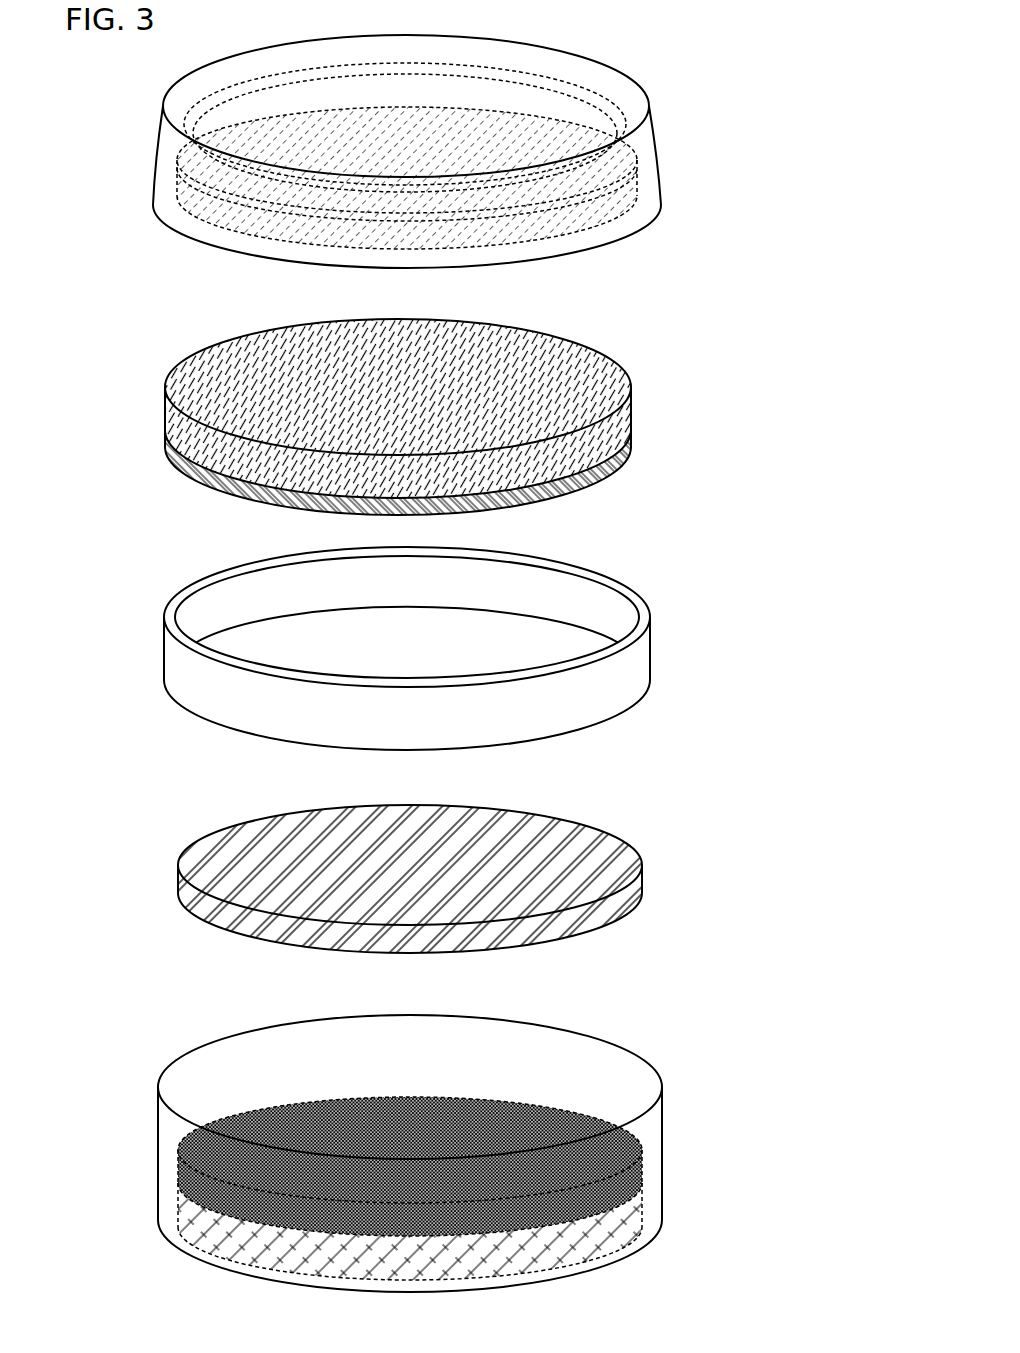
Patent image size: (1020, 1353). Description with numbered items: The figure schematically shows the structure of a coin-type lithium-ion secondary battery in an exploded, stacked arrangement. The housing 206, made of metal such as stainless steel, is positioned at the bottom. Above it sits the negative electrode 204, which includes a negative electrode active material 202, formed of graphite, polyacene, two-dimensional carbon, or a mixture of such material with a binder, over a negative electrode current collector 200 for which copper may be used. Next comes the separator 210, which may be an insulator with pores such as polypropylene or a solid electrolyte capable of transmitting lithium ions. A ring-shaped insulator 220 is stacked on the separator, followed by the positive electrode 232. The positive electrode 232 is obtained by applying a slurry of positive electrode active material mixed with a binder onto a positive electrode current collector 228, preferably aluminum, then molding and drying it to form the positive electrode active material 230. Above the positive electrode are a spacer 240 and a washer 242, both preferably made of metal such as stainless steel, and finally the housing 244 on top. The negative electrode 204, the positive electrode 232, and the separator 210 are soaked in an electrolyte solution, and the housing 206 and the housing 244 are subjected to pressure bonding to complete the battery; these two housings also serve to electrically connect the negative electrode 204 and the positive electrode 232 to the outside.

The negative electrode current collector 200 is at (642, 1224).
The negative electrode active material 202 is at (640, 1192).
The negative electrode 204 is at (494, 1188).
The housing 206 is at (663, 1128).
The separator 210 is at (181, 895).
The ring-shaped insulator 220 is at (649, 649).
The positive electrode current collector 228 is at (630, 421).
The positive electrode active material 230 is at (628, 462).
The positive electrode 232 is at (487, 417).
The spacer 240 is at (210, 220).
The washer 242 is at (195, 148).
The housing 244 is at (428, 151).